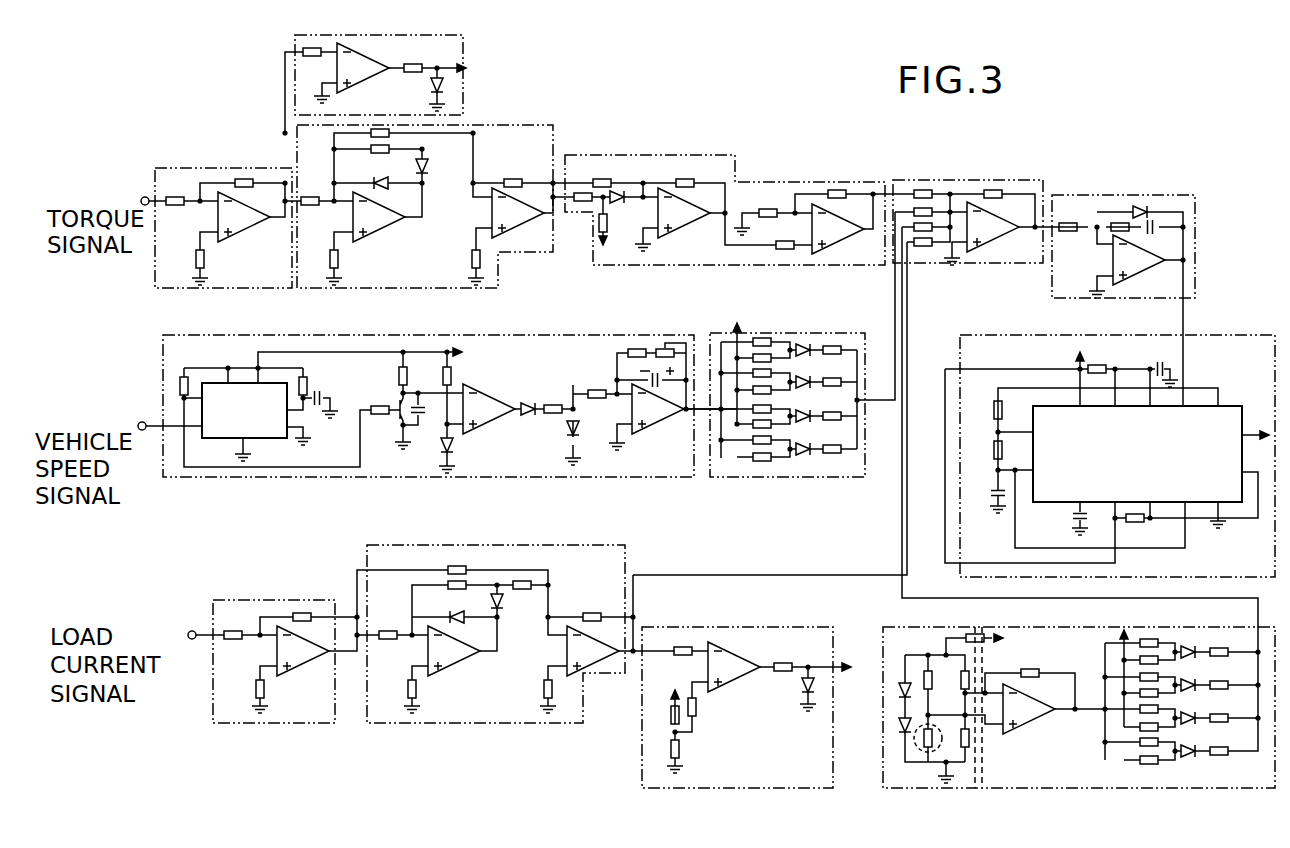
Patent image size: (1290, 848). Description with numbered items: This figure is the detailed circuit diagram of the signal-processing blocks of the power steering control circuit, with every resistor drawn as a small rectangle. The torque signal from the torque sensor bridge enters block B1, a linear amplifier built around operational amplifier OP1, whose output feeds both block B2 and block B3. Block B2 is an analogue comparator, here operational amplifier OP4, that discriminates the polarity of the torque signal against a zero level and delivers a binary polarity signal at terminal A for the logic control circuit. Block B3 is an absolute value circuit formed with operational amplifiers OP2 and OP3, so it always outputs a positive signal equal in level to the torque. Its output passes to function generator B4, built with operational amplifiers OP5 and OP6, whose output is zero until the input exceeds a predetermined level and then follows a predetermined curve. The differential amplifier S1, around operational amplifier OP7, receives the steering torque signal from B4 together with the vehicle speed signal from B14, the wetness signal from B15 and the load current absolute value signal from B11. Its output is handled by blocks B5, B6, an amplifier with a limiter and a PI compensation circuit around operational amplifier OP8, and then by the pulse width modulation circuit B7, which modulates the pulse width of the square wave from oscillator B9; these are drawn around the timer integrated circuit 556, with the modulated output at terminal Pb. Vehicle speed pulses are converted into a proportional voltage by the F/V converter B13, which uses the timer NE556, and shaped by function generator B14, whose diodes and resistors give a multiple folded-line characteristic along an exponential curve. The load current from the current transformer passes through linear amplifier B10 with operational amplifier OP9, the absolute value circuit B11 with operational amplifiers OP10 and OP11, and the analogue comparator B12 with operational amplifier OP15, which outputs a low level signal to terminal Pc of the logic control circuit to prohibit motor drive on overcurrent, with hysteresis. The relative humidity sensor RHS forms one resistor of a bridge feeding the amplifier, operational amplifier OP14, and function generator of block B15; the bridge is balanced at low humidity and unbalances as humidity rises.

The linear amplifier block B1 is at (223, 216).
The analogue comparator block B2 is at (365, 82).
The absolute value circuit block B3 is at (418, 192).
The function generator block B4 is at (719, 199).
The amplifier with limiter block B5 is at (1123, 300).
The PI compensation circuit block B6 is at (1123, 300).
The pulse width modulation circuit block B7 is at (1110, 458).
The oscillator B9 is at (1110, 456).
The linear amplifier block B10 is at (380, 664).
The absolute value circuit block B11 is at (495, 653).
The analogue comparator block B12 is at (746, 682).
The F/V converter B13 is at (437, 422).
The function generator block B14 is at (763, 478).
The wetness signal processing block B15 is at (1079, 708).
The differential amplifier block S1 is at (966, 205).
The operational amplifier OP1 is at (250, 243).
The operational amplifier OP2 is at (388, 243).
The operational amplifier OP3 is at (520, 240).
The operational amplifier OP4 is at (360, 88).
The operational amplifier OP5 is at (690, 240).
The operational amplifier OP6 is at (850, 254).
The operational amplifier OP7 is at (1000, 216).
The operational amplifier OP8 is at (1150, 275).
The operational amplifier OP9 is at (300, 675).
The operational amplifier OP10 is at (462, 675).
The operational amplifier OP11 is at (565, 660).
The operational amplifier OP14 is at (1044, 723).
The operational amplifier OP15 is at (742, 690).
The output terminal A is at (472, 68).
The output terminal Pb is at (1258, 423).
The input terminal of logic control circuit Pc is at (850, 655).
The relative humidity sensor RHS is at (920, 752).
The NE556 timer IC NE556 is at (244, 410).
The 556 timer IC 556 is at (1137, 454).